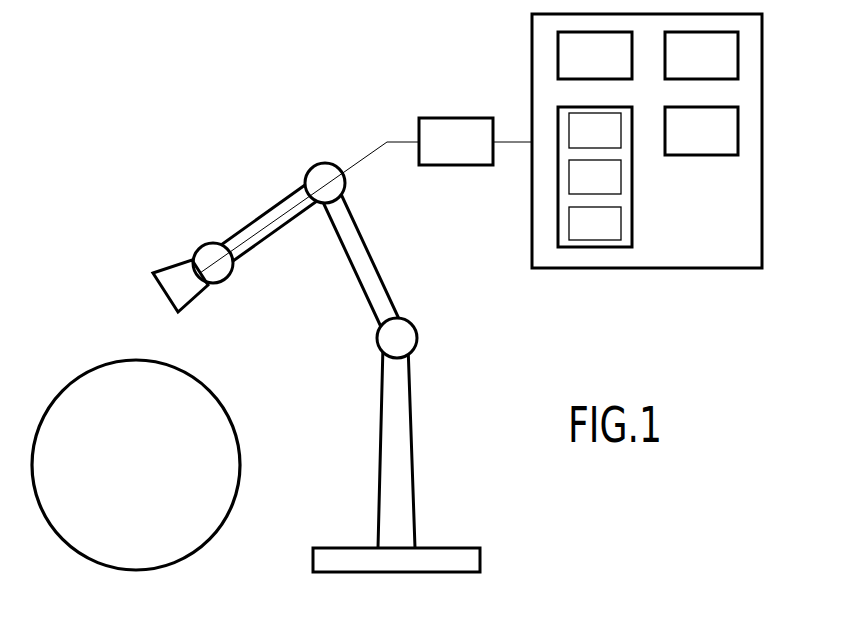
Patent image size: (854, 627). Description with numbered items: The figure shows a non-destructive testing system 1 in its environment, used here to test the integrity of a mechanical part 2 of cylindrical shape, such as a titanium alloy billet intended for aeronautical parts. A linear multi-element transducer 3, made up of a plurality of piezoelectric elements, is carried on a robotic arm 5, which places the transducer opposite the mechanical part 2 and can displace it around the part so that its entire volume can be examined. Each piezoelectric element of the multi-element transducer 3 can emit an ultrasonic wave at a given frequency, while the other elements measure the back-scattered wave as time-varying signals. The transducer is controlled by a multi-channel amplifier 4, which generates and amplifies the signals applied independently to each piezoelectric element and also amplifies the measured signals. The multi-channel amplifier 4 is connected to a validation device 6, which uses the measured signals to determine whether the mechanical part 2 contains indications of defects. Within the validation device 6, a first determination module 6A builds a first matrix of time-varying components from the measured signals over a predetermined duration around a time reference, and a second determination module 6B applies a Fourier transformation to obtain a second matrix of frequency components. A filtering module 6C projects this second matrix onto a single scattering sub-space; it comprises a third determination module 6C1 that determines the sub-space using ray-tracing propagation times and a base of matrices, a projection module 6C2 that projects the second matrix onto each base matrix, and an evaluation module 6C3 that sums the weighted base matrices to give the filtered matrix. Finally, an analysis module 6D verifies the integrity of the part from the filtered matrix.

The non-destructive testing system 1 is at (137, 206).
The mechanical part 2 is at (234, 447).
The multi-element transducer 3 is at (177, 290).
The multi-channel amplifier 4 is at (461, 152).
The robotic arm 5 is at (407, 446).
The validation device 6 is at (731, 244).
The first determination module 6A is at (607, 64).
The second determination module 6B is at (713, 64).
The filtering module 6C is at (632, 195).
The third determination module 6C1 is at (610, 142).
The projection module 6C2 is at (610, 188).
The evaluation module 6C3 is at (610, 234).
The analysis module 6D is at (713, 139).